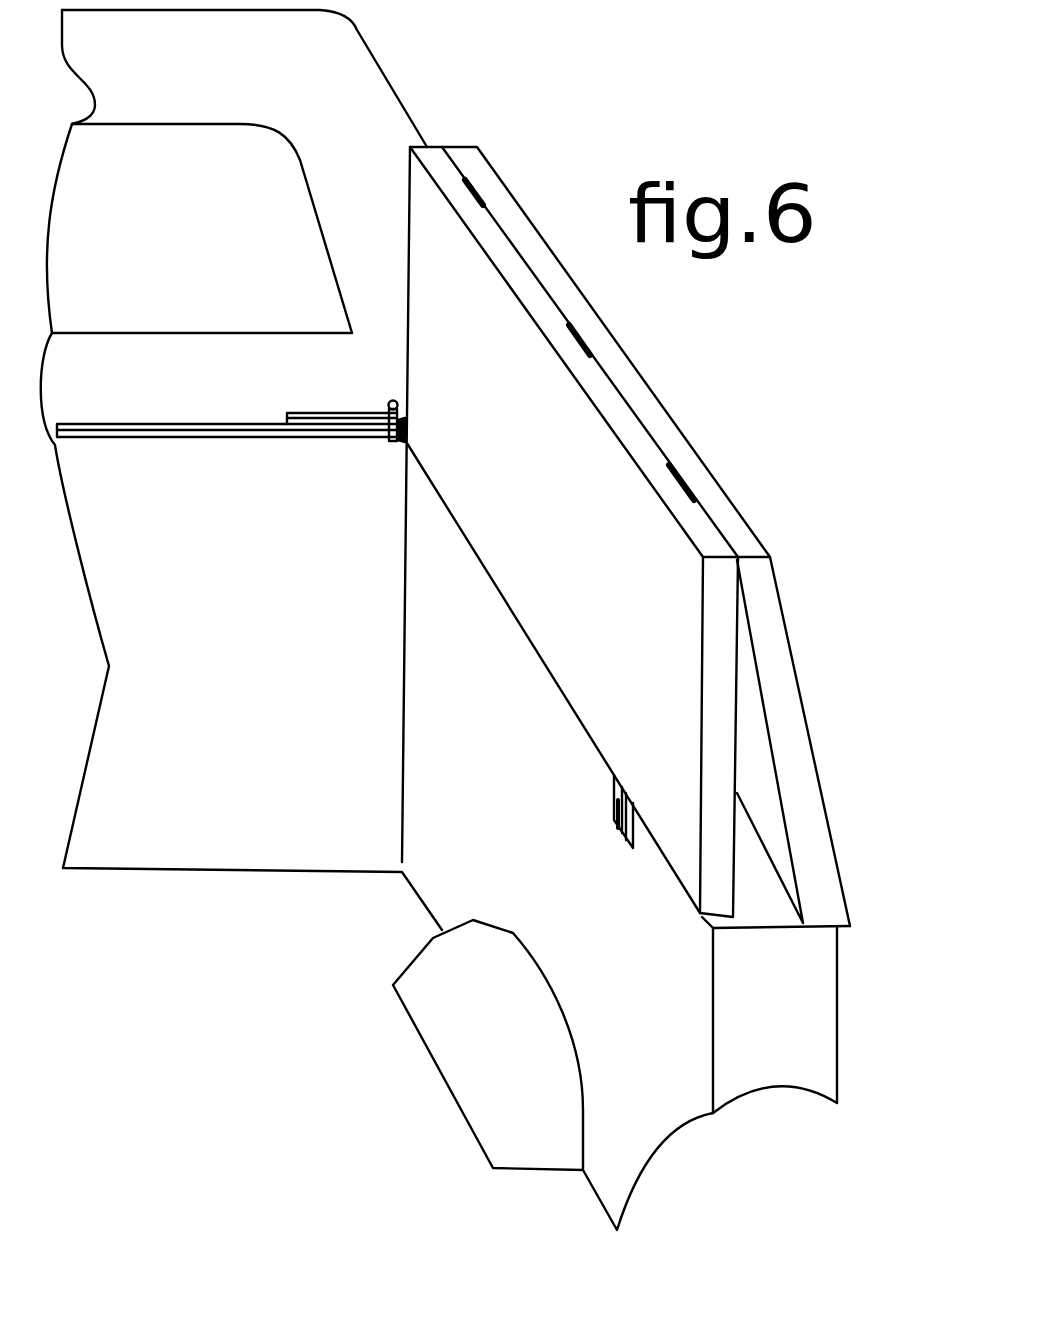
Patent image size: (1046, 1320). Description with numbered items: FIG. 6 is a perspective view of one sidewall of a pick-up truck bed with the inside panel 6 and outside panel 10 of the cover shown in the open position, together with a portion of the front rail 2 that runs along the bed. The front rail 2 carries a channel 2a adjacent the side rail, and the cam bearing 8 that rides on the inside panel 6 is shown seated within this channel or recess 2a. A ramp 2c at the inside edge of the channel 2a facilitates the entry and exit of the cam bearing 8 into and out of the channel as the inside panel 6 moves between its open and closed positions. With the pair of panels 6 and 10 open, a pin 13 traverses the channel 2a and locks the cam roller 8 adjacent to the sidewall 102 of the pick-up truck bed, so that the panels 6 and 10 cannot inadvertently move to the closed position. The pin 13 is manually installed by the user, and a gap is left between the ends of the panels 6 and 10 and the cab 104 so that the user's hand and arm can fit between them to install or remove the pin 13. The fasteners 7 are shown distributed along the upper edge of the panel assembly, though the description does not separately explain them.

The cab 104 is at (385, 143).
The fasteners 7 is at (478, 192).
The inside panel 6 is at (430, 285).
The outside panel 10 is at (777, 627).
The sidewall 102 is at (425, 762).
The front rail 2 is at (182, 437).
The ramp 2c is at (283, 423).
The channel 2a is at (352, 413).
The cam bearing 8 is at (407, 422).
The pin 13 is at (398, 440).